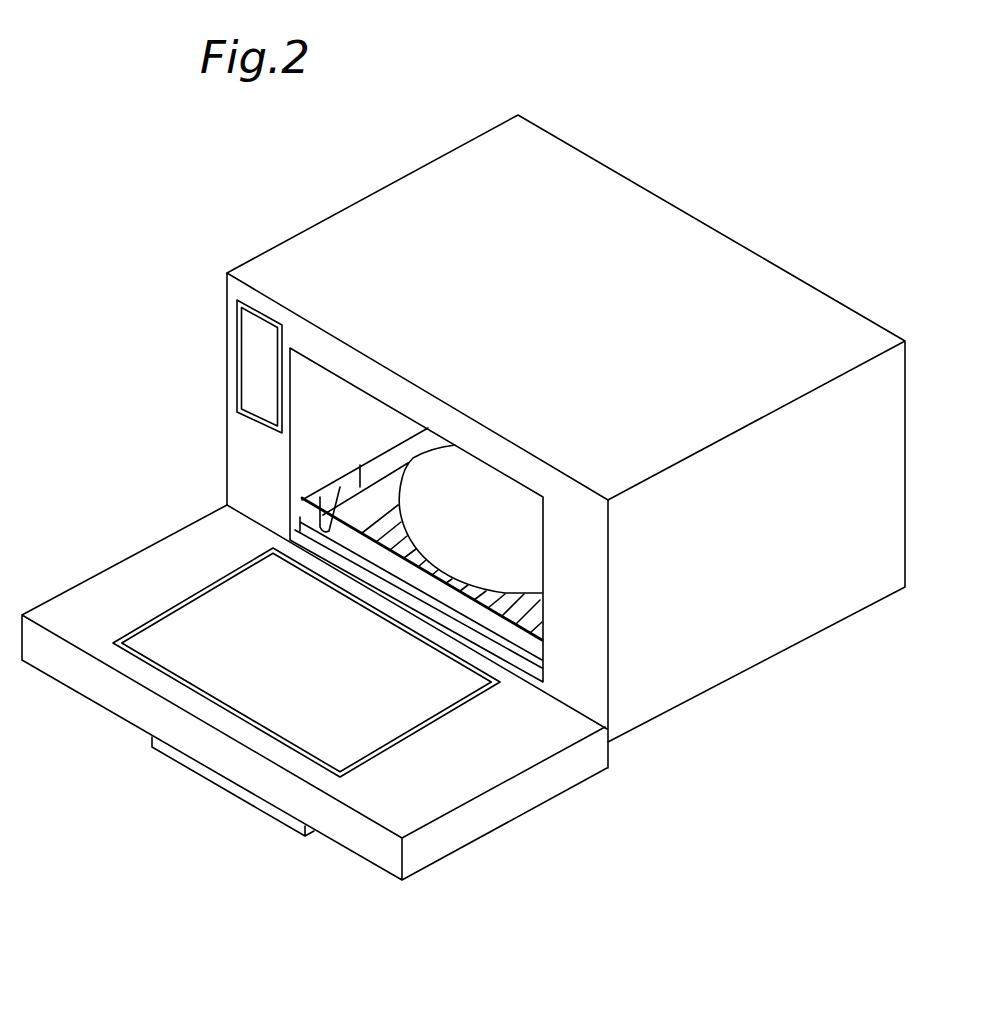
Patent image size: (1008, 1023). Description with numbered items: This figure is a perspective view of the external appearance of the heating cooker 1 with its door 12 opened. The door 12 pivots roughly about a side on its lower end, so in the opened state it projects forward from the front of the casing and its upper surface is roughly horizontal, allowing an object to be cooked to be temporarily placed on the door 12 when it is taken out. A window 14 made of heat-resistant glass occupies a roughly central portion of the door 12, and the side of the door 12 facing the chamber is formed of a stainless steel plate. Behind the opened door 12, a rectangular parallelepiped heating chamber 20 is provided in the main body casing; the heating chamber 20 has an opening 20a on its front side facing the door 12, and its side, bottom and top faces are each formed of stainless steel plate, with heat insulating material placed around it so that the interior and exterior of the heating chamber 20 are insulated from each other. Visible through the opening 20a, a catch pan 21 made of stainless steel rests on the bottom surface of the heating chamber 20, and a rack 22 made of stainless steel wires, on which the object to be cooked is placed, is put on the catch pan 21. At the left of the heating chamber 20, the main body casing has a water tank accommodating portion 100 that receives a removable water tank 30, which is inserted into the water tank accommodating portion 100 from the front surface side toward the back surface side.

The heating cooker 1 is at (753, 232).
The door 12 is at (93, 682).
The window 14 is at (260, 688).
The heating chamber 20 is at (350, 413).
The opening 20a is at (320, 457).
The catch pan 21 is at (383, 558).
The rack 22 is at (543, 617).
The water tank 30 is at (252, 401).
The water tank accommodating portion 100 is at (237, 312).